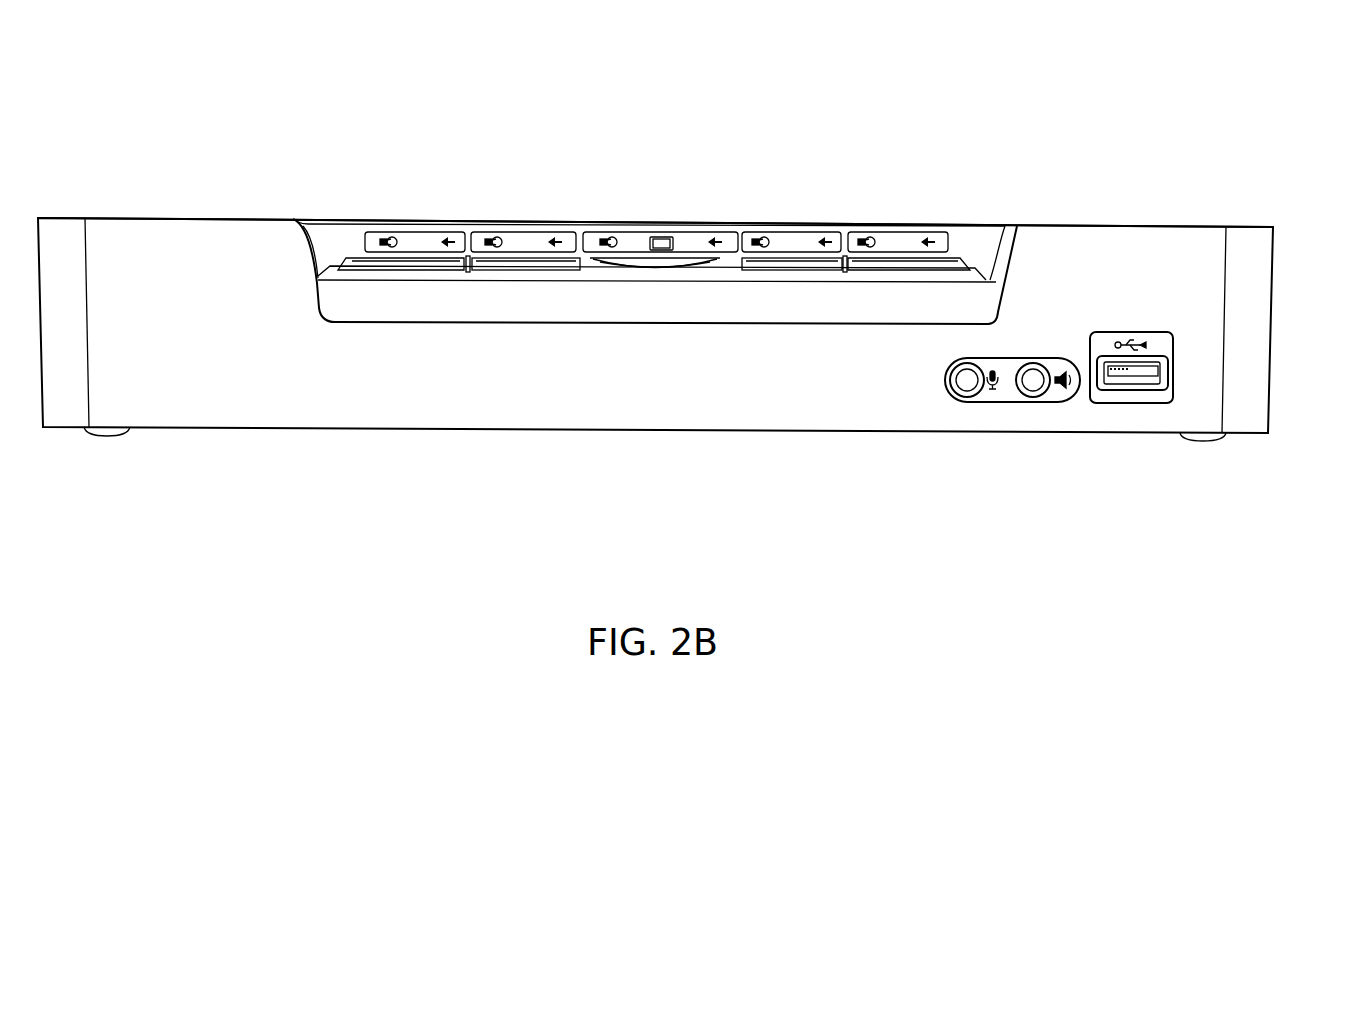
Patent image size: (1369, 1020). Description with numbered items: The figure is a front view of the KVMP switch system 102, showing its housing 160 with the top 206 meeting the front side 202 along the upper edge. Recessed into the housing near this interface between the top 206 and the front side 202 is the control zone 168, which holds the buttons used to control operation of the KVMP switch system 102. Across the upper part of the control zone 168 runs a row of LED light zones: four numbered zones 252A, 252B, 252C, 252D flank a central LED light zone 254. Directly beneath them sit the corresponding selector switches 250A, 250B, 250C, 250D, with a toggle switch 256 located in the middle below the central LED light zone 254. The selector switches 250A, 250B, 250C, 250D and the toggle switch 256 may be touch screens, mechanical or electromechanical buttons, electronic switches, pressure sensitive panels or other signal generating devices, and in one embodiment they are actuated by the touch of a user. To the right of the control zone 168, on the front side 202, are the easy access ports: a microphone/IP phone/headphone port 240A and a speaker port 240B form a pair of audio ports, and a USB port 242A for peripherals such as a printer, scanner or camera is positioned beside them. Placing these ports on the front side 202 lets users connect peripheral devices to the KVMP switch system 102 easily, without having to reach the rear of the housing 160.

The KVMP switch system 102 is at (1186, 163).
The housing 160 is at (186, 218).
The control zone 168 is at (590, 145).
The top 206 is at (1207, 222).
The front side 202 is at (1175, 290).
The LED light zone 252A is at (388, 240).
The LED light zone 252B is at (520, 240).
The LED light zone 254 is at (660, 242).
The LED light zone 252C is at (792, 240).
The LED light zone 252D is at (902, 240).
The selector switch 250A is at (403, 266).
The selector switch 250B is at (530, 266).
The toggle switch 256 is at (652, 268).
The selector switch 250C is at (805, 266).
The selector switch 250D is at (900, 266).
The microphone/IP phone/headphone port 240A is at (967, 402).
The speaker port 240B is at (1033, 402).
The USB port 242A is at (1130, 403).